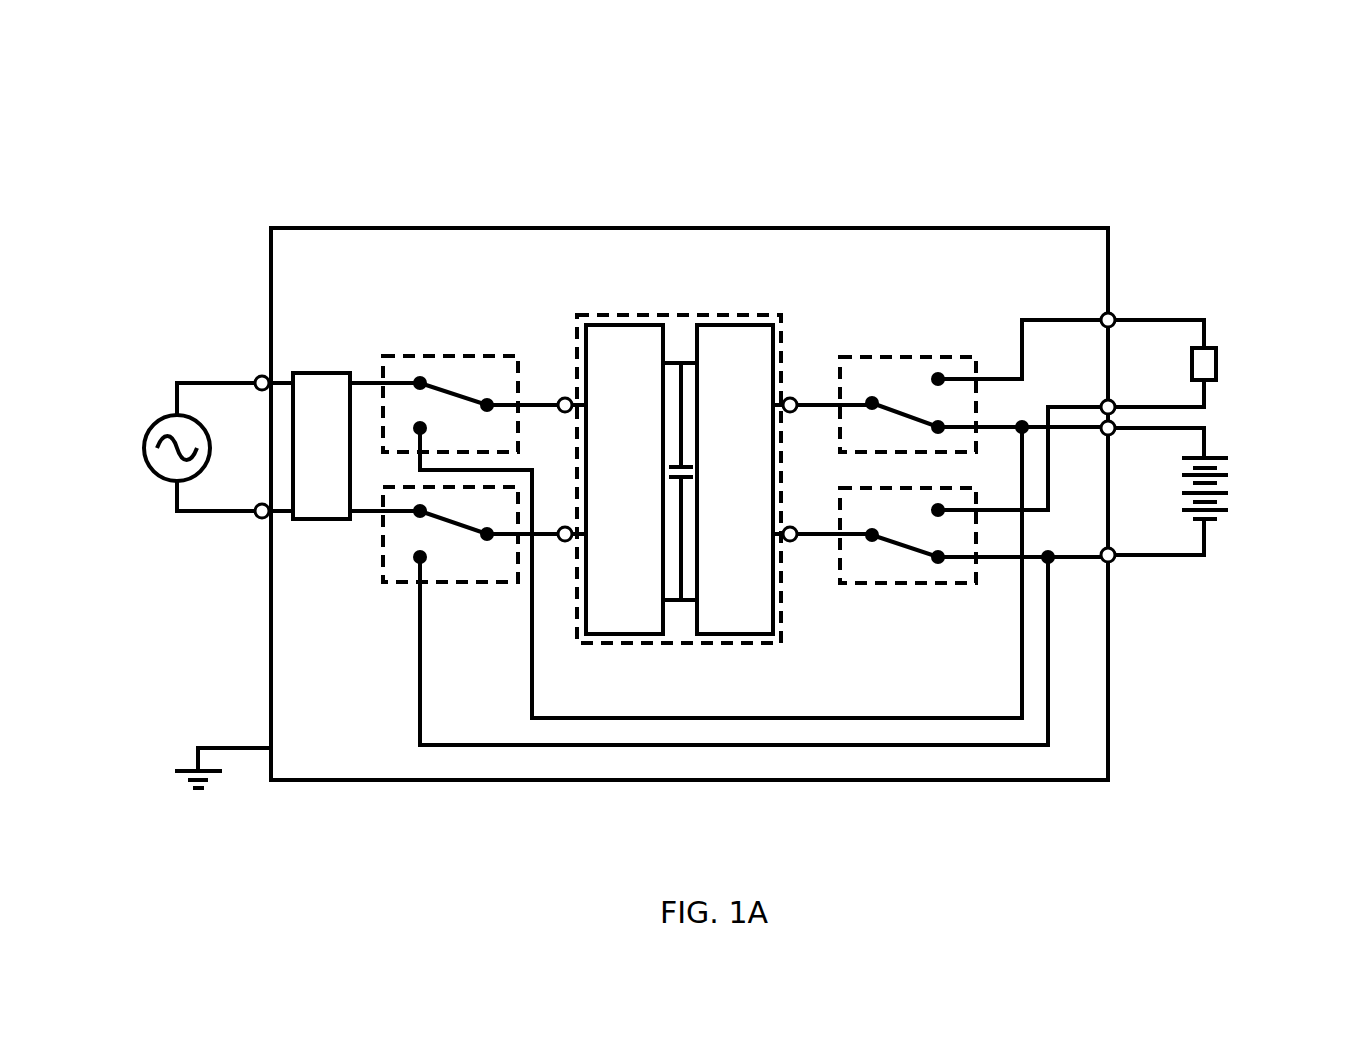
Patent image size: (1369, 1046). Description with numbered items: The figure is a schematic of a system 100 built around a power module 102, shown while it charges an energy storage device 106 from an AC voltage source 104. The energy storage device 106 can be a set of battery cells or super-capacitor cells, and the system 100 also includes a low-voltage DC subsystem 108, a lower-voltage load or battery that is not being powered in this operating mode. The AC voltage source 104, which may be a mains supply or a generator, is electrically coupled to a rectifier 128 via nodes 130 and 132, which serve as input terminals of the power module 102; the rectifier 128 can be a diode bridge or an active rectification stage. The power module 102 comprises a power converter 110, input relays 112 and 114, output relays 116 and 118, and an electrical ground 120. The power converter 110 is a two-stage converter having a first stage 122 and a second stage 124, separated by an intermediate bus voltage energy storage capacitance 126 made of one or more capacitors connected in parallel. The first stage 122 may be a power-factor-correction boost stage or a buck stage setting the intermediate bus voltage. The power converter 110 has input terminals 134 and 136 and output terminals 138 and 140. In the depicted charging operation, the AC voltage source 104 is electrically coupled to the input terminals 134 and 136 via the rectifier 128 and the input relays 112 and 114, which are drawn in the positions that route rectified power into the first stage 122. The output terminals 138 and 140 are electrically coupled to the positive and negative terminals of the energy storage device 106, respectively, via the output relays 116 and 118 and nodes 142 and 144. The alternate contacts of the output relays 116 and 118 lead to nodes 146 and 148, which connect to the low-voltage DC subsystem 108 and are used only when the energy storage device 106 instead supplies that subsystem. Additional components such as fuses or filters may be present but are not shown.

The system 100 is at (906, 154).
The power module 102 is at (391, 228).
The AC voltage source 104 is at (143, 450).
The energy storage device 106 is at (1246, 483).
The low-voltage DC subsystem 108 is at (1216, 360).
The power converter 110 is at (679, 486).
The input relay 112 is at (383, 361).
The input relay 114 is at (383, 563).
The output relay 116 is at (964, 357).
The output relay 118 is at (950, 583).
The electrical ground 120 is at (168, 744).
The first stage 122 is at (622, 342).
The second stage 124 is at (739, 342).
The intermediate bus voltage energy storage capacitance 126 is at (681, 610).
The rectifier 128 is at (300, 519).
The node 130 is at (255, 381).
The node 132 is at (255, 513).
The input terminal 134 is at (565, 398).
The input terminal 136 is at (565, 541).
The output terminal 138 is at (790, 398).
The output terminal 140 is at (790, 541).
The node 142 is at (1113, 433).
The node 144 is at (1113, 560).
The node 146 is at (1113, 315).
The node 148 is at (1113, 402).